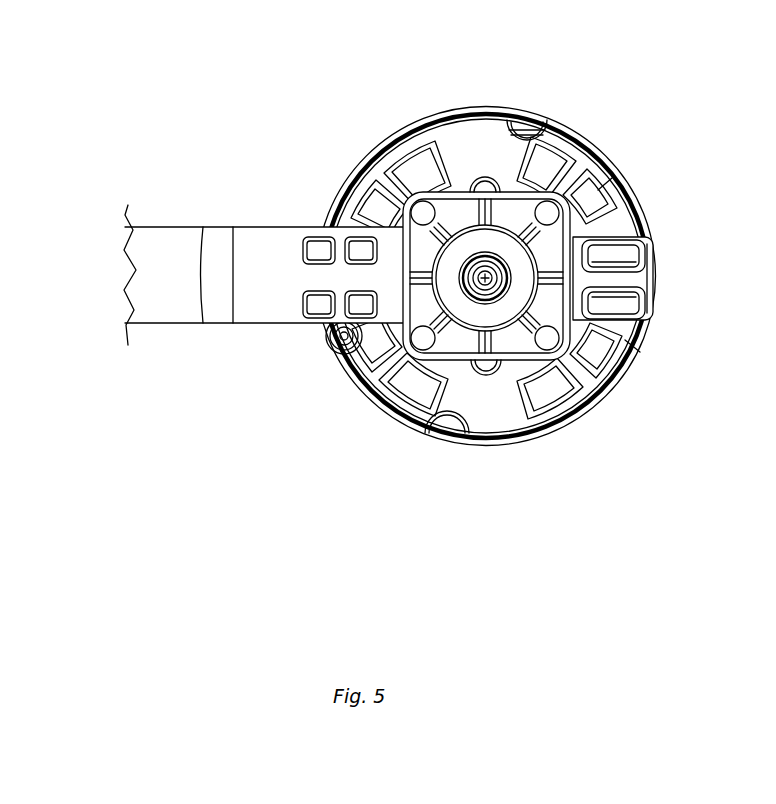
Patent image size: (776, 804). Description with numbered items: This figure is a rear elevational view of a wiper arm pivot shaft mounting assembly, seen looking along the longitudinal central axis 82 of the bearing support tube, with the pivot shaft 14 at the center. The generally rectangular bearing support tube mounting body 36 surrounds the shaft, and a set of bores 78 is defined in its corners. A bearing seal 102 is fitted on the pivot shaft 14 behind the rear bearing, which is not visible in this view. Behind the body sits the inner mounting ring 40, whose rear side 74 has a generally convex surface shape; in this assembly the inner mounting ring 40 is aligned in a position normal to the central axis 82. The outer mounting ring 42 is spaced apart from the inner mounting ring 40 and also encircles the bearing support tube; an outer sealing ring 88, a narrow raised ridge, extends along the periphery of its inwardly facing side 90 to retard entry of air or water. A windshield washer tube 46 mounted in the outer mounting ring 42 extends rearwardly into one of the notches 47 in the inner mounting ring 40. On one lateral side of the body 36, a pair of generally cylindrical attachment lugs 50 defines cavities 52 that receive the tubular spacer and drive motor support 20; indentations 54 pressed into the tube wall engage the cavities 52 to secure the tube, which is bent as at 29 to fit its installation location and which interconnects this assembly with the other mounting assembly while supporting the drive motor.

The pivot shaft 14 is at (500, 295).
The spacer and drive motor support 20 is at (165, 323).
The bend 29 is at (222, 323).
The bearing support tube mounting body 36 is at (512, 190).
The inner mounting ring 40 is at (485, 128).
The outer mounting ring 42 is at (640, 225).
The windshield washer tube 46 is at (335, 355).
The notch 47 is at (545, 148).
The attachment lugs 50 is at (660, 283).
The cavities 52 is at (617, 305).
The indentations 54 is at (357, 248).
The rear side 74 is at (602, 373).
The bores 78 is at (583, 203).
The longitudinal central axis 82 is at (478, 292).
The outer sealing ring 88 is at (608, 200).
The inwardly facing side 90 is at (425, 160).
The bearing seal 102 is at (632, 348).